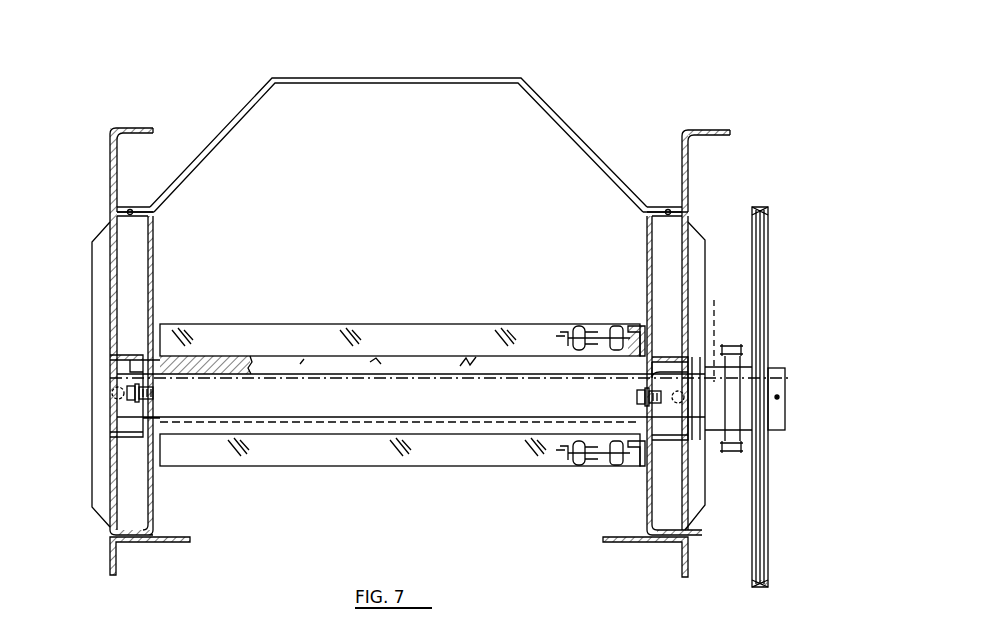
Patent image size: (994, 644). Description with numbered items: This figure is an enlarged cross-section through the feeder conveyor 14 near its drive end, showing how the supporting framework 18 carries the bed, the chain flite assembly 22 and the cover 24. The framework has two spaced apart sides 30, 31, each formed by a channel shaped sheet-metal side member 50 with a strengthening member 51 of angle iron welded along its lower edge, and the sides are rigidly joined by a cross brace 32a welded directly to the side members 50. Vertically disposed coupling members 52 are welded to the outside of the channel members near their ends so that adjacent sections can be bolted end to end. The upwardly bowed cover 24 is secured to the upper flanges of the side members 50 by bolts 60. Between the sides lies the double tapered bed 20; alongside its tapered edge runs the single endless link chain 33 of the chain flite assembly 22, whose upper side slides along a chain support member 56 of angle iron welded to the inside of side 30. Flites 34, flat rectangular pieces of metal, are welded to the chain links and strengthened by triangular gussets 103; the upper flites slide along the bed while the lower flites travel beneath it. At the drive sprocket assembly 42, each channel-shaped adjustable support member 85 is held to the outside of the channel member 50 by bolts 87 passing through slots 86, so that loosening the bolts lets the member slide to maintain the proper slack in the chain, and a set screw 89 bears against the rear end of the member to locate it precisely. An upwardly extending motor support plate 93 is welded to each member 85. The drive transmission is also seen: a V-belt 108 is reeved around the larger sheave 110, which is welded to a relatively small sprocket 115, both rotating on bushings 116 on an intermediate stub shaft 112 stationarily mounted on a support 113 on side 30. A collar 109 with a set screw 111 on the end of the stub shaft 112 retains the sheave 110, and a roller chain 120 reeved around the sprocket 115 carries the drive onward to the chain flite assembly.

The feeder conveyor 14 is at (742, 156).
The supporting framework 18 is at (692, 558).
The double tapered bed 20 is at (335, 346).
The chain flite assembly 22 is at (578, 482).
The cover 24 is at (448, 78).
The side 30 is at (636, 265).
The side 31 is at (158, 280).
The cross brace 32a is at (437, 446).
The chain 33 is at (586, 326).
The flite 34 is at (280, 328).
The sprocket assembly 42 is at (463, 500).
The side member 50 is at (153, 240).
The strengthening member 51 is at (168, 542).
The coupling member 52 is at (92, 256).
The chain support member 56 is at (640, 322).
The bolt 60 is at (130, 210).
The adjustable support member 85 is at (125, 437).
The slot 86 is at (128, 418).
The bolt 87 is at (127, 388).
The set screw 89 is at (112, 395).
The motor support plate 93 is at (141, 128).
The gusset 103 is at (557, 330).
The V-belt 108 is at (762, 588).
The collar 109 is at (783, 370).
The sheave 110 is at (768, 572).
The set screw 111 is at (786, 394).
The stub shaft 112 is at (786, 412).
The support 113 is at (696, 442).
The sprocket 115 is at (731, 346).
The bushing 116 is at (774, 445).
The roller chain 120 is at (731, 454).